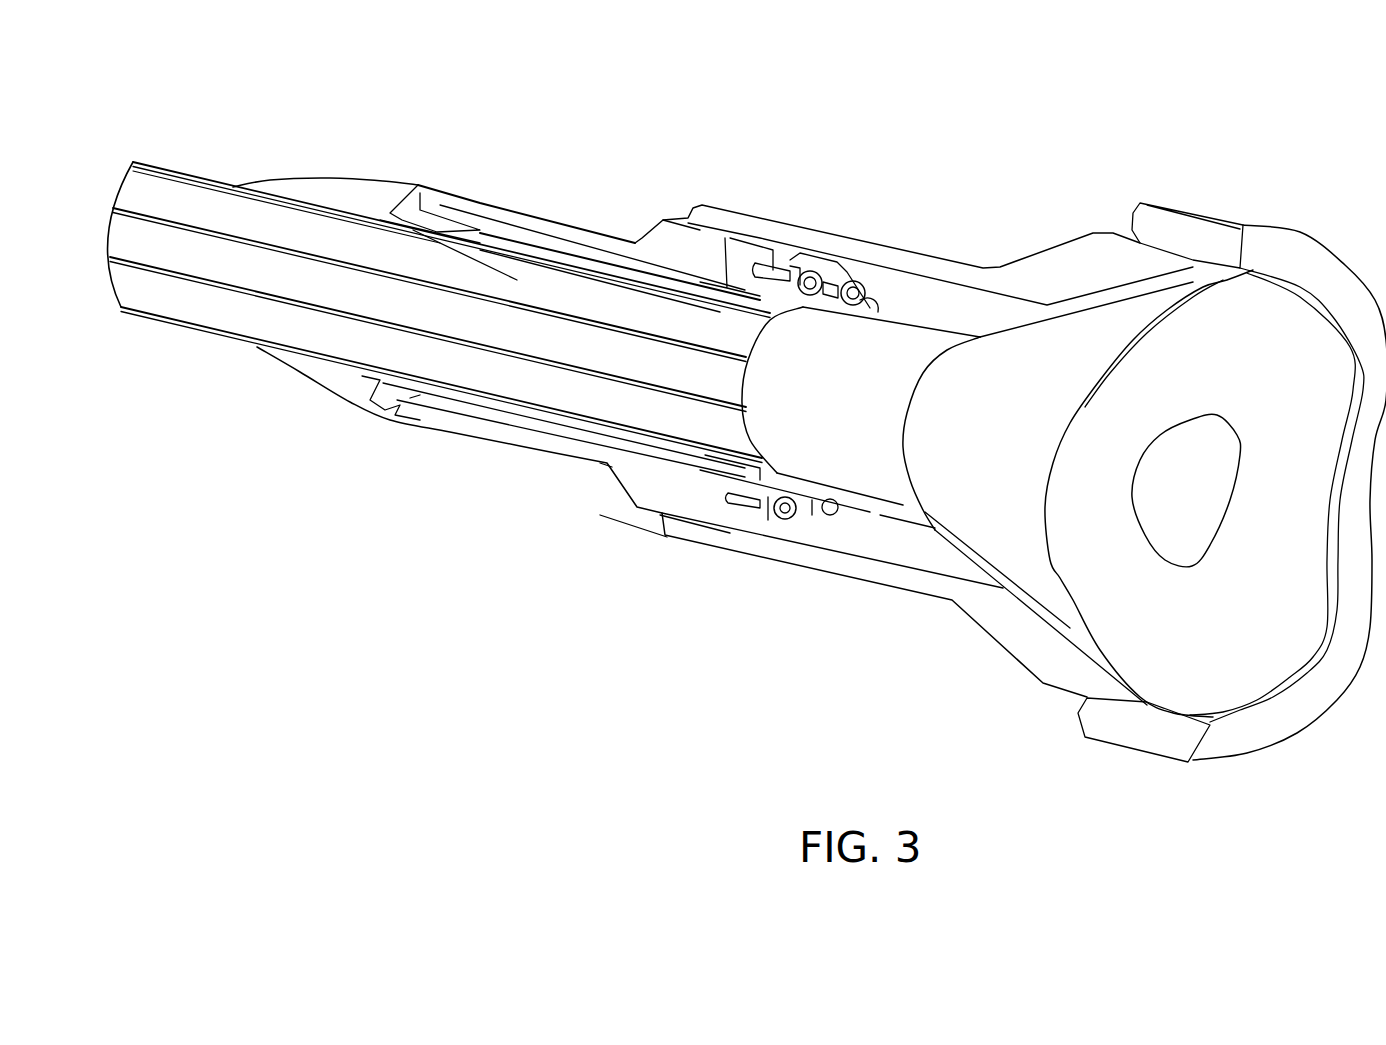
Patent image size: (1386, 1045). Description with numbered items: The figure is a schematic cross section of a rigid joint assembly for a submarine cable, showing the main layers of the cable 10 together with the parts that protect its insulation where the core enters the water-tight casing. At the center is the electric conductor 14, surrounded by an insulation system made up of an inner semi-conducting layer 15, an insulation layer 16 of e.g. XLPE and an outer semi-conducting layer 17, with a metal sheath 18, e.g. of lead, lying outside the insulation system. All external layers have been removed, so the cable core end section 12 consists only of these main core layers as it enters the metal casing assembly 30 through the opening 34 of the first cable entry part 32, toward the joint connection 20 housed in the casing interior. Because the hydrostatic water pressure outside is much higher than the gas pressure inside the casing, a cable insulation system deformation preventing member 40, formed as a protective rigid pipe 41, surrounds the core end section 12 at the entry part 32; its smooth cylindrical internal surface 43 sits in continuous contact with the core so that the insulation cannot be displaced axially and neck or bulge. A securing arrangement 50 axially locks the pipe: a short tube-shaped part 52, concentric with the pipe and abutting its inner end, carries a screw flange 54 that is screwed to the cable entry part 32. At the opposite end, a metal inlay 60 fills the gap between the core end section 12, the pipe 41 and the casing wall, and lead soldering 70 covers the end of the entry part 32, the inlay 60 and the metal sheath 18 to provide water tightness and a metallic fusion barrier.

The first electric cable 10 is at (200, 162).
The cable core end section 12 is at (513, 246).
The electric conductor 14 is at (271, 275).
The inner semi-conducting layer 15 is at (235, 287).
The insulation layer 16 is at (196, 303).
The outer semi-conducting layer 17 is at (165, 313).
The metal sheath 18 is at (124, 311).
The joint connection 20 is at (1017, 357).
The casing assembly 30 is at (983, 652).
The first cable entry part 32 is at (638, 238).
The opening 34 is at (362, 376).
The cable insulation system deformation preventing member 40 is at (590, 250).
The protective rigid pipe 41 is at (543, 250).
The cylindrical internal surface 43 is at (545, 406).
The securing arrangement 50 is at (850, 258).
The tube-shaped part 52 is at (734, 288).
The screw flange 54 is at (812, 265).
The inlay 60 is at (408, 189).
The lead soldering 70 is at (330, 194).